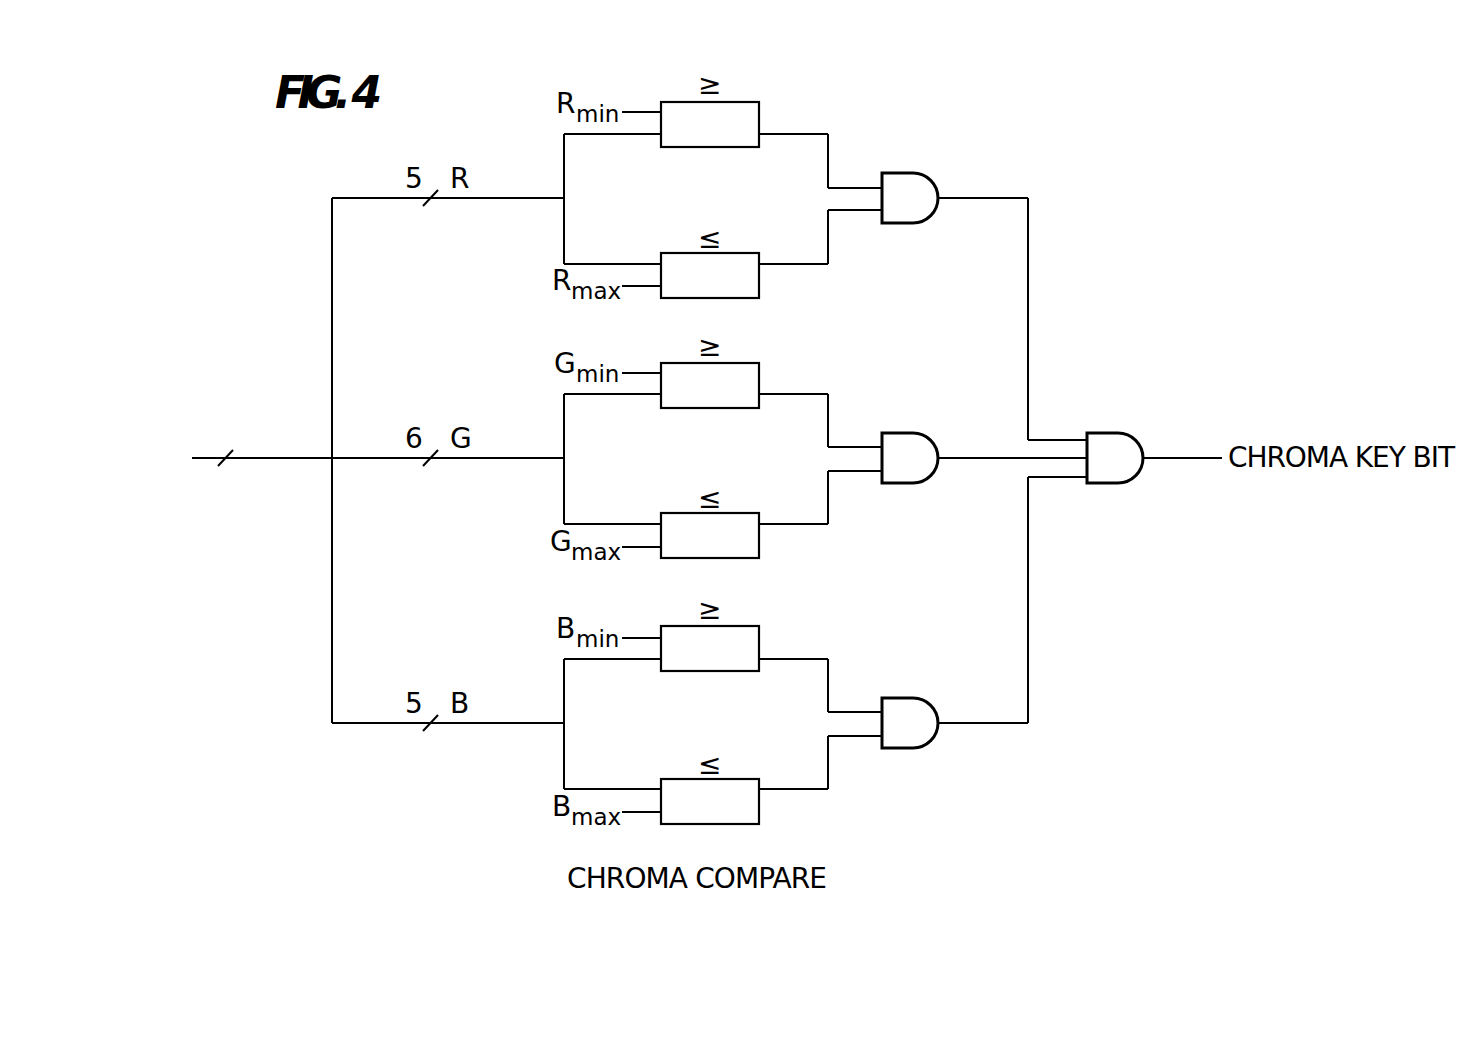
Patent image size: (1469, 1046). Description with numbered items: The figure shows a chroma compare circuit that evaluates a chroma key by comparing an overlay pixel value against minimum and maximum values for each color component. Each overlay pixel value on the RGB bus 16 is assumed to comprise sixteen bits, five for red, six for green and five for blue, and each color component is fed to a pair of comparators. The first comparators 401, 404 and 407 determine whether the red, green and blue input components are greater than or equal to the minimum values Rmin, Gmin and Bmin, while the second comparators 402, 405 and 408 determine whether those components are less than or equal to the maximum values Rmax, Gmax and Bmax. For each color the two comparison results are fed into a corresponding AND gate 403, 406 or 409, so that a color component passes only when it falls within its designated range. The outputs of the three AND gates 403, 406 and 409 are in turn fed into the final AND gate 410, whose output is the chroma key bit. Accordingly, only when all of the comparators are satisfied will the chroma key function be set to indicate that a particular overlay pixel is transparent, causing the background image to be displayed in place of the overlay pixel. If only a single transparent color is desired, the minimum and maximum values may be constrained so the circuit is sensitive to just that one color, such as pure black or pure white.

The RGB input bus (16 bits) 16 is at (227, 443).
The first comparator 401 is at (759, 107).
The second comparator 402 is at (759, 280).
The AND gate 403 is at (936, 186).
The first comparator 404 is at (759, 368).
The second comparator 405 is at (759, 540).
The AND gate 406 is at (936, 446).
The first comparator 407 is at (759, 631).
The second comparator 408 is at (759, 806).
The AND gate 409 is at (936, 711).
The AND gate 410 is at (1141, 437).